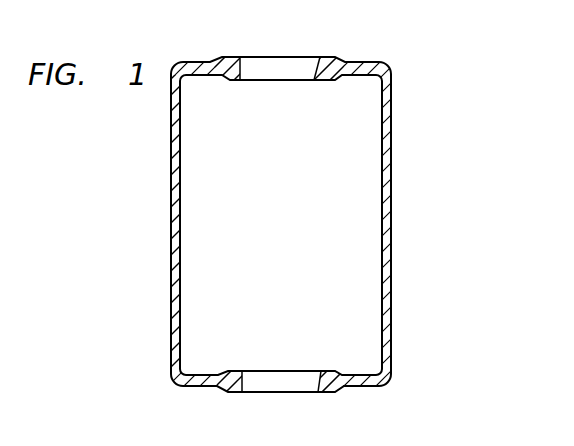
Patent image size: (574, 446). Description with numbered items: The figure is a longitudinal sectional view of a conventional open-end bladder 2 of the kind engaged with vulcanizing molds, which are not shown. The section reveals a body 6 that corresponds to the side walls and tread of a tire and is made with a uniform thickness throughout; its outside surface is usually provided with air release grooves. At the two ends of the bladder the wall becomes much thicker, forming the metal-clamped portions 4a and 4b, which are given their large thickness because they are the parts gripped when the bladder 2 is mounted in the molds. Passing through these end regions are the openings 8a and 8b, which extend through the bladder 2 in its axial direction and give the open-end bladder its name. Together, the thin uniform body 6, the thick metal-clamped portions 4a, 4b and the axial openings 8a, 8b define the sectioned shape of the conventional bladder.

The open-end bladder 2 is at (404, 121).
The body 6 is at (174, 285).
The opening 8a is at (313, 65).
The opening 8b is at (245, 378).
The metal-clamped portion 4a is at (333, 382).
The metal-clamped portion 4b is at (337, 57).